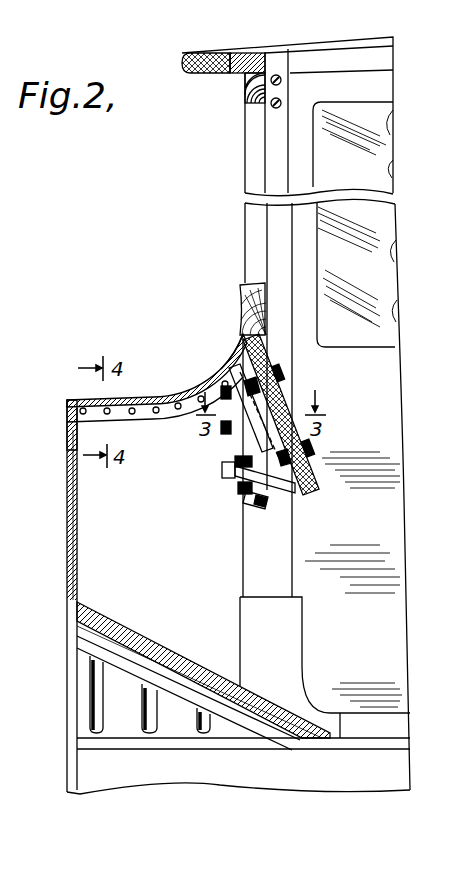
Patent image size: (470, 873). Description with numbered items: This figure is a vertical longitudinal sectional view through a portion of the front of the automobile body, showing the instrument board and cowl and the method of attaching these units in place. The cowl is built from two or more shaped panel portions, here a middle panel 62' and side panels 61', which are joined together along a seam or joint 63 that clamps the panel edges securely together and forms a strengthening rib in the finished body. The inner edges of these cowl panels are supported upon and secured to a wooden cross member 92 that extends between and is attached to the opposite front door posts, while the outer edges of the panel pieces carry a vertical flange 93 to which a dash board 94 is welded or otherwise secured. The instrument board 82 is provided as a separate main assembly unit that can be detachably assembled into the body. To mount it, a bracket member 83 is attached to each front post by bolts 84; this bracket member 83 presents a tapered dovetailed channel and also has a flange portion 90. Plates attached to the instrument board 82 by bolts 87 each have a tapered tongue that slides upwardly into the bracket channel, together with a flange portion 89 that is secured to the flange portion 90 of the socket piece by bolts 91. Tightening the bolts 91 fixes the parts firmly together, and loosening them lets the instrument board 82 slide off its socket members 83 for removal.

The side panel 61' is at (82, 596).
The middle panel 62' is at (132, 370).
The seam or joint 63 is at (150, 395).
The instrument board 82 is at (278, 393).
The bracket member 83 is at (240, 438).
The bolt 84 is at (222, 348).
The bolt 87 is at (280, 374).
The flange portion 89 is at (278, 497).
The flange portion 90 is at (236, 481).
The bolt 91 is at (222, 467).
The wooden cross member 92 is at (243, 300).
The vertical flange 93 is at (66, 427).
The dash board 94 is at (77, 553).